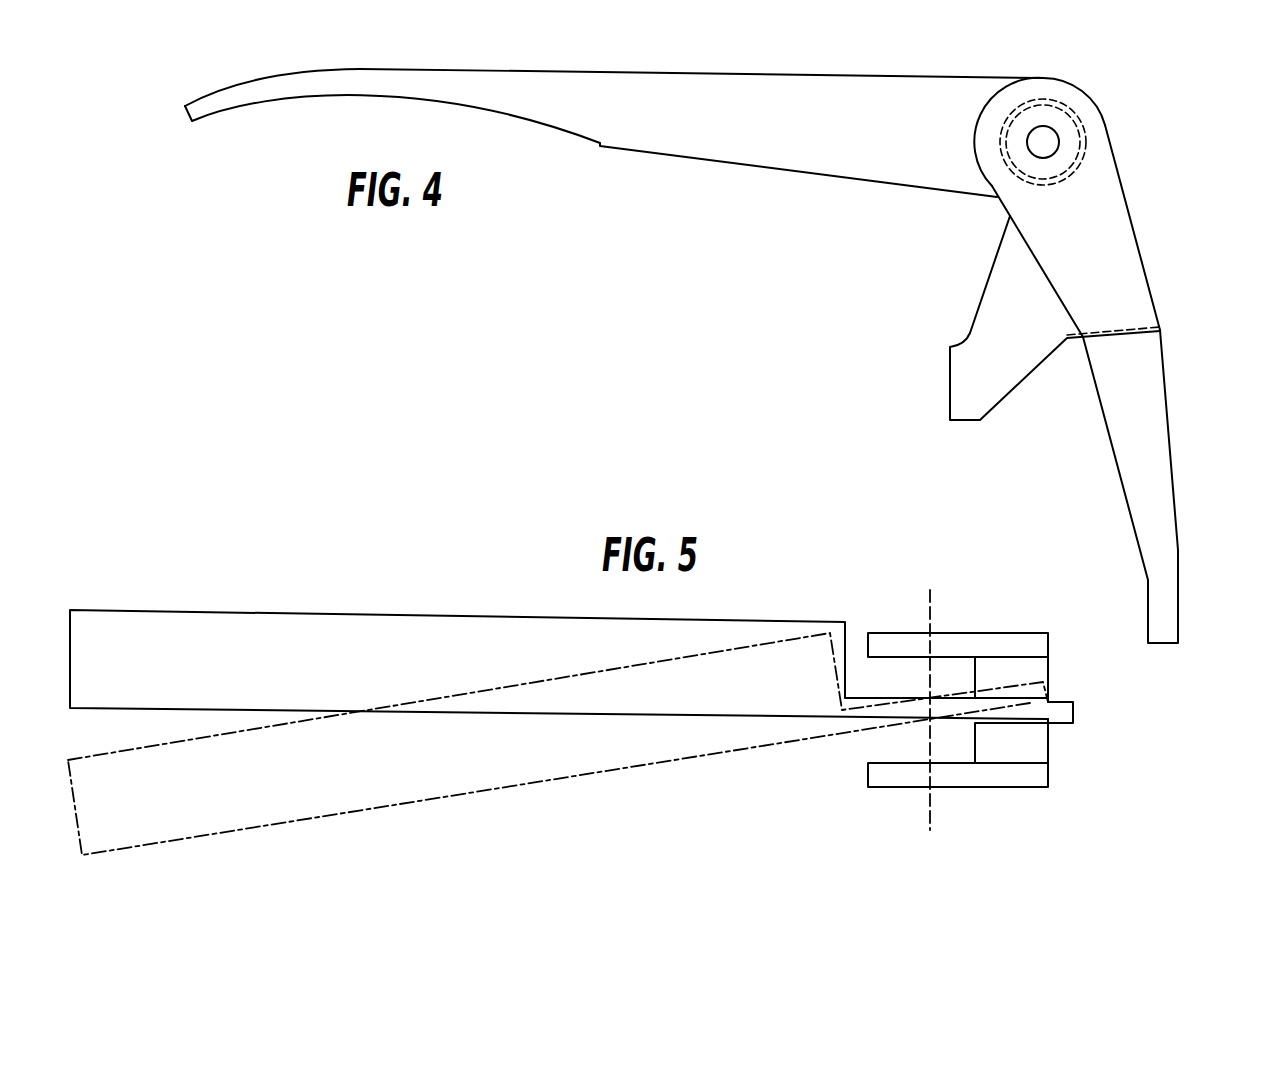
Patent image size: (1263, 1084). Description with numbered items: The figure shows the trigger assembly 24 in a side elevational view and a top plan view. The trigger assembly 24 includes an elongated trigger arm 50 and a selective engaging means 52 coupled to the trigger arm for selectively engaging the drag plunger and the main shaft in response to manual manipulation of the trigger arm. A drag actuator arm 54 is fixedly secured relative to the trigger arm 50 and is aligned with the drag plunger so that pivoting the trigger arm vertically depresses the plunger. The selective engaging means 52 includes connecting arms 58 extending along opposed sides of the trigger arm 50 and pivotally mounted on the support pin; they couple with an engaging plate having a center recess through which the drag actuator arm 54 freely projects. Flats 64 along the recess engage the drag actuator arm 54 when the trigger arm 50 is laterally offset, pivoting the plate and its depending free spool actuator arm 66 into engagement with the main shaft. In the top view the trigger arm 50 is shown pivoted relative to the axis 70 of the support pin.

In FIG. 4, the trigger assembly 24 is at (713, 323).
In FIG. 4, the trigger arm 50 is at (713, 147).
In FIG. 5, the trigger arm 50 is at (441, 627).
In FIG. 4, the selective engaging means 52 is at (1127, 175).
In FIG. 4, the drag actuator arm 54 is at (962, 378).
In FIG. 5, the drag actuator arm 54 is at (1063, 712).
In FIG. 4, the connecting arm 58 is at (1120, 263).
In FIG. 5, the connecting arm 58 is at (968, 645).
In FIG. 5, the flats 64 is at (1042, 668).
In FIG. 4, the free spool actuator arm 66 is at (1153, 418).
In FIG. 5, the axis 70 is at (930, 605).